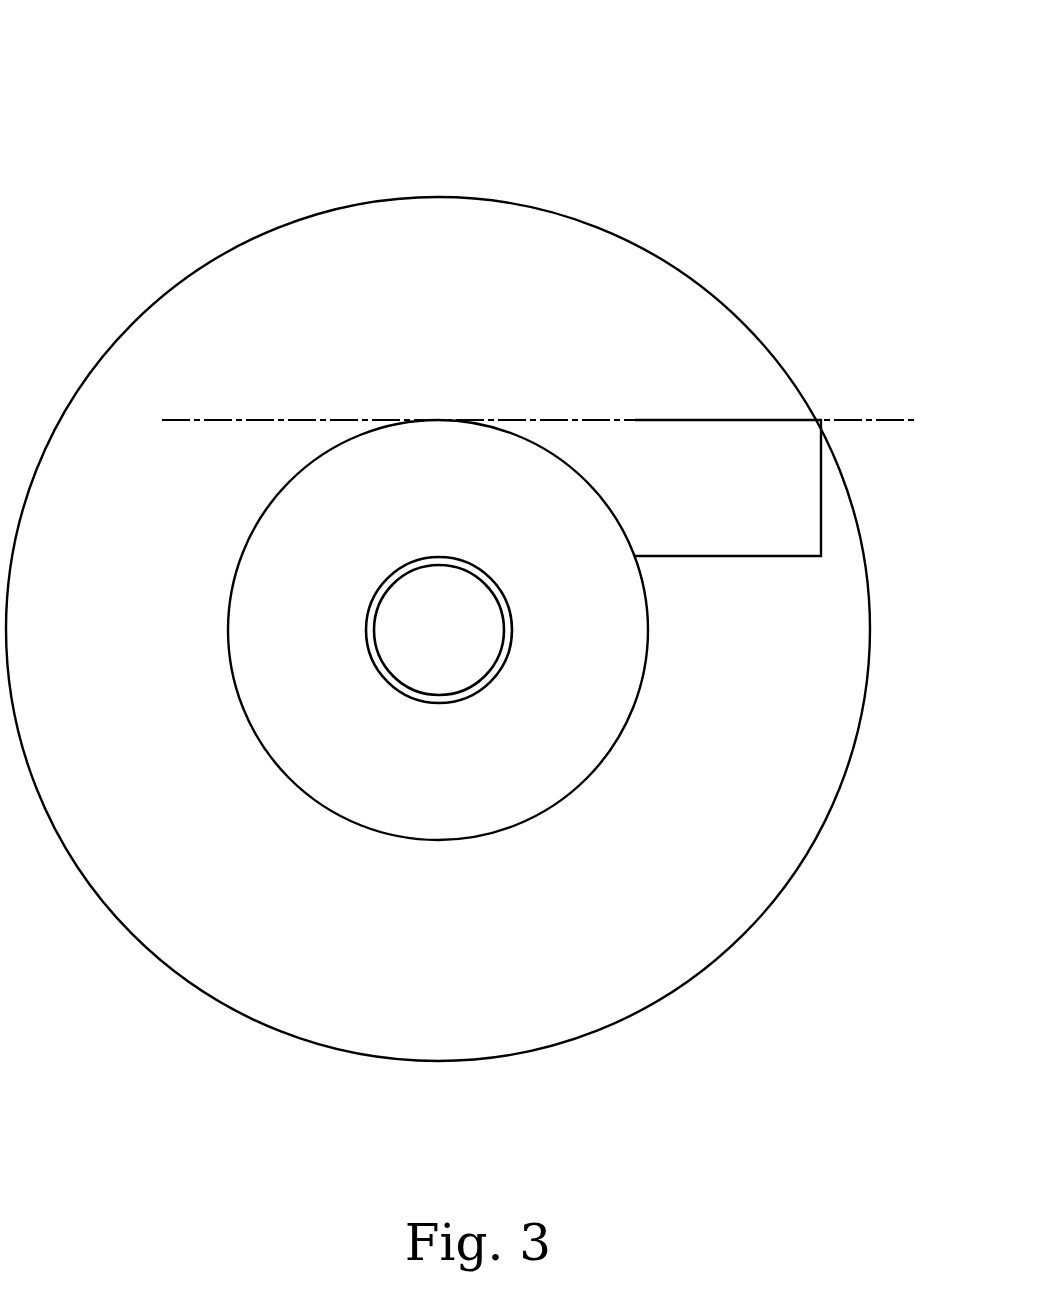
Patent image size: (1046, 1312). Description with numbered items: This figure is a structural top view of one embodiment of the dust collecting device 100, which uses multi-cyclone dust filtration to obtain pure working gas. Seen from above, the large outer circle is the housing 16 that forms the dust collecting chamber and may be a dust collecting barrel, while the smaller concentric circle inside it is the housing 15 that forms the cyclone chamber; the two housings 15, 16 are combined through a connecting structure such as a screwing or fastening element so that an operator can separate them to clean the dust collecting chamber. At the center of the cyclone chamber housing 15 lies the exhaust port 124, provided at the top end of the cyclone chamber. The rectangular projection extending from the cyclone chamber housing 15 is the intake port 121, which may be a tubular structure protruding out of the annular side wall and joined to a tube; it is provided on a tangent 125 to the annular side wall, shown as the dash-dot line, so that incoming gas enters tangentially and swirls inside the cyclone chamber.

The dust collecting device 100 is at (790, 46).
The housing 16 is at (202, 968).
The housing 15 is at (508, 828).
The exhaust port 124 is at (375, 667).
The intake port 121 is at (728, 557).
The tangent 125 is at (862, 419).